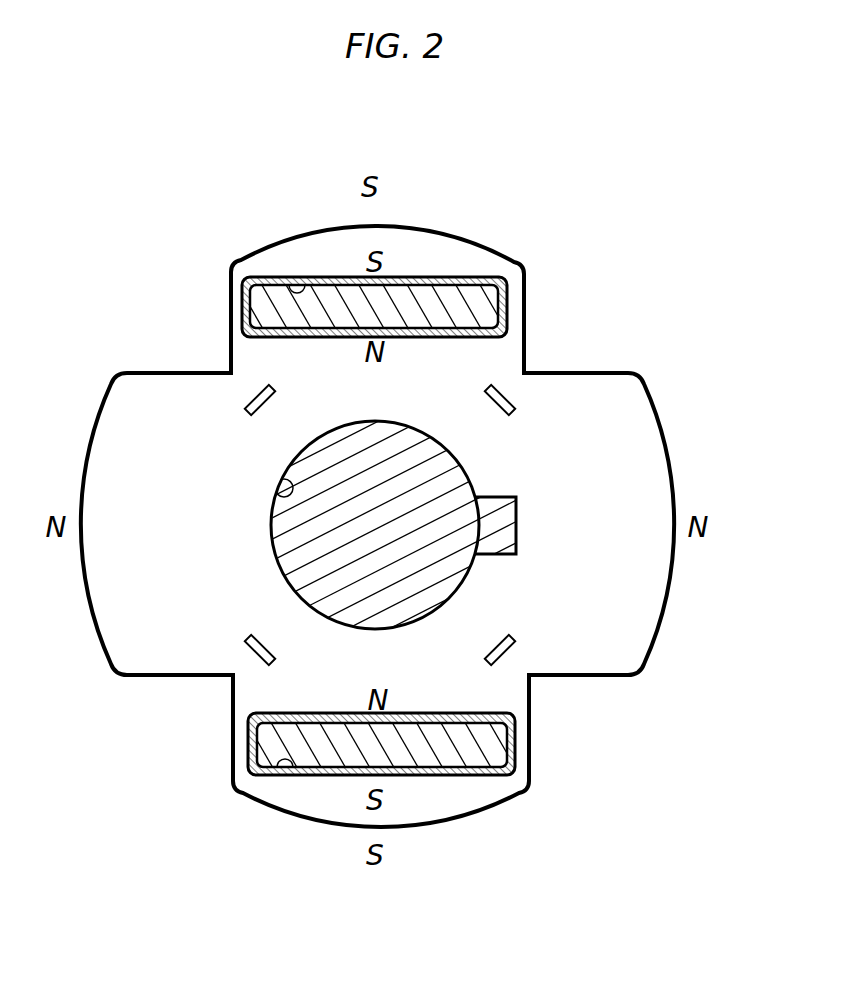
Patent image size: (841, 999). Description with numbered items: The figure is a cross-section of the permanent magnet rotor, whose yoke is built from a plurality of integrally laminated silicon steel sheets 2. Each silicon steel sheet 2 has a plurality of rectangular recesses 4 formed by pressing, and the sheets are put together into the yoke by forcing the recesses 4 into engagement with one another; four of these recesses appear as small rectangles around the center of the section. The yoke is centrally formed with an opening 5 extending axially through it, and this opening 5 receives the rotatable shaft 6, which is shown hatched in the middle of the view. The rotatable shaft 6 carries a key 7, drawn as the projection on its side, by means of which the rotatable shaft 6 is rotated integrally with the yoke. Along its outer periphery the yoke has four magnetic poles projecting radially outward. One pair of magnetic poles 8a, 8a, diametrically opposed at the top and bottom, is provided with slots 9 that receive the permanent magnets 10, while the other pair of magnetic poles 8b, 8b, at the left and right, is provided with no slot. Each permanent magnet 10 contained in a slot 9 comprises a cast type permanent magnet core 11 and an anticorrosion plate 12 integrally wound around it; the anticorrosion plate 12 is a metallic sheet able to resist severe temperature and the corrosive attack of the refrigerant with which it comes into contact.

The silicon steel sheet 2 is at (384, 527).
The rectangular recess 4 is at (251, 400).
The opening 5 is at (381, 526).
The rotatable shaft 6 is at (293, 547).
The key 7 is at (507, 540).
The magnetic pole 8a is at (483, 258).
The magnetic pole 8b is at (112, 543).
The slot 9 is at (291, 287).
The permanent magnet 10 is at (374, 525).
The cast type permanent magnet core 11 is at (480, 307).
The anticorrosion plate 12 is at (415, 280).